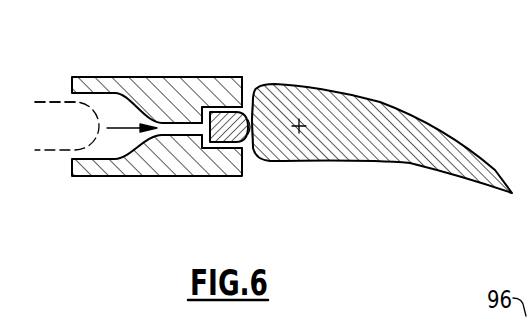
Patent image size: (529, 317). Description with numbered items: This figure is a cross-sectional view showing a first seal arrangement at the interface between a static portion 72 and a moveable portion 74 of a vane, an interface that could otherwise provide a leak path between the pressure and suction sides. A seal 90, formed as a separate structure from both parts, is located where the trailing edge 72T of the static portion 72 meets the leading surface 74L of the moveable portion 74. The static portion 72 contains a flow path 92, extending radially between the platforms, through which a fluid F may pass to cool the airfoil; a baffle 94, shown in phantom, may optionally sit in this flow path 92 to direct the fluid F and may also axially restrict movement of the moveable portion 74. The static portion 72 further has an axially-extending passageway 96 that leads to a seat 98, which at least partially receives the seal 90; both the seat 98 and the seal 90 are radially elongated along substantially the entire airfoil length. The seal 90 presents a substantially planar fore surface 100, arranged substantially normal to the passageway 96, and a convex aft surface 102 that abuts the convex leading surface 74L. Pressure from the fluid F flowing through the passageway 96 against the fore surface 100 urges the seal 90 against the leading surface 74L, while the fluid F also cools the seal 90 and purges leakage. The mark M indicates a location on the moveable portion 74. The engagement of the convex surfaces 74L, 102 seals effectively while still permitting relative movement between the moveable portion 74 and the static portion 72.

The static portion 72 is at (128, 88).
The trailing edge 72T is at (246, 84).
The moveable portion 74 is at (421, 135).
The leading surface 74L is at (253, 163).
The seal 90 is at (230, 142).
The flow path 92 is at (82, 143).
The baffle 94 is at (62, 100).
The axially-extending passageway 96 is at (192, 121).
The seat 98 is at (222, 135).
The fore surface 100 is at (193, 135).
The aft surface 102 is at (250, 124).
The center of mass M is at (302, 131).
The fluid F is at (125, 126).